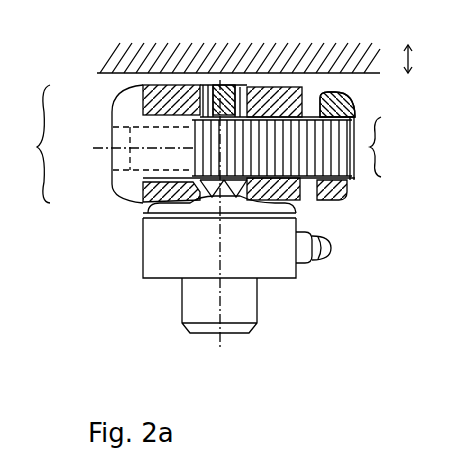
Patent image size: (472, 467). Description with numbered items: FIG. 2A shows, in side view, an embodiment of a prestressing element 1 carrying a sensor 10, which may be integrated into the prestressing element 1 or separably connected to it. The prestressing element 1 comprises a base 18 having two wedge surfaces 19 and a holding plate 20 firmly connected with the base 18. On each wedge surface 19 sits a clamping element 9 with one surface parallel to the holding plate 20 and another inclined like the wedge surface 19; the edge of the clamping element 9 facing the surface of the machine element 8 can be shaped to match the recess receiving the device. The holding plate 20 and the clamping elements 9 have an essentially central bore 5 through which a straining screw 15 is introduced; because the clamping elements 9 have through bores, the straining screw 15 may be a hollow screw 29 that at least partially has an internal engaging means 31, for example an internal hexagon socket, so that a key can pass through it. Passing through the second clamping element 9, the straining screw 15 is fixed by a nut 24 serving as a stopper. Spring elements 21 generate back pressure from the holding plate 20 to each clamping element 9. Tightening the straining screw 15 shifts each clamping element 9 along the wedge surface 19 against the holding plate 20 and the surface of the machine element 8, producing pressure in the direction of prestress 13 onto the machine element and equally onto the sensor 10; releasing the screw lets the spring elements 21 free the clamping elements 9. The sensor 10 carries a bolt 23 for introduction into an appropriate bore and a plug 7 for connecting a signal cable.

The prestressing element 1 is at (30, 168).
The central bore 5 is at (293, 148).
The plug 7 is at (322, 254).
The surface of the machine element 8 is at (357, 72).
The clamping element 9 is at (166, 90).
The sensor 10 is at (172, 257).
The direction of prestress 13 is at (421, 59).
The straining screw 15 is at (355, 110).
The base 18 is at (152, 205).
The wedge surface 19 is at (293, 211).
The holding plate 20 is at (241, 93).
The spring element 21 is at (207, 88).
The bolt 23 is at (233, 302).
The nut 24 is at (350, 186).
The hollow screw 29 is at (355, 110).
The engaging means 31 is at (112, 131).